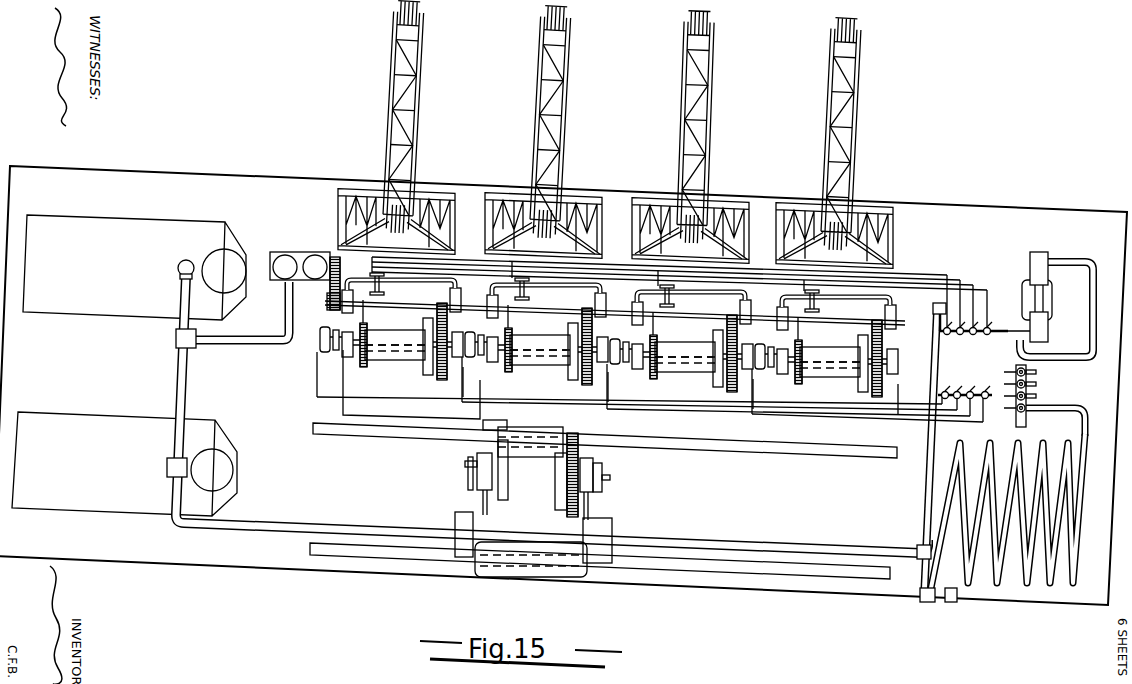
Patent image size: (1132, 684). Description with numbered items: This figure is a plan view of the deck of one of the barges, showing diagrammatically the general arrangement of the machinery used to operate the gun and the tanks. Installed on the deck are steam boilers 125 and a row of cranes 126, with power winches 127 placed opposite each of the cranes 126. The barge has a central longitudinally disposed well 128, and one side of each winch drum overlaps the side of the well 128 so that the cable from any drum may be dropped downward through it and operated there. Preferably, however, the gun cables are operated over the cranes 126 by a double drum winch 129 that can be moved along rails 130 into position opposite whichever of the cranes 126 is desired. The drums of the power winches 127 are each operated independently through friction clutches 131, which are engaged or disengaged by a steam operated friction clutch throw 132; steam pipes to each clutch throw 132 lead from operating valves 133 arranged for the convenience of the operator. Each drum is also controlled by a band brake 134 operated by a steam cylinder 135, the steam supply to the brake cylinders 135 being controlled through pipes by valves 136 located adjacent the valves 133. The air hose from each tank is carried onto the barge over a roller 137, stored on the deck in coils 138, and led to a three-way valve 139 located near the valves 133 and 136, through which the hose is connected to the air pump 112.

The air pump 112 is at (1027, 260).
The steam boilers 125 is at (33, 428).
The cranes 126 is at (537, 55).
The power winches 127 is at (547, 357).
The well 128 is at (368, 377).
The double drum winch 129 is at (538, 482).
The rails 130 is at (448, 433).
The friction clutches 131 is at (863, 345).
The friction clutch throw 132 is at (320, 340).
The operating valves 133 is at (945, 390).
The band brake 134 is at (362, 320).
The steam cylinder 135 is at (500, 283).
The valves 136 is at (945, 333).
The roller 137 is at (930, 600).
The coils 138 is at (1050, 577).
The three-way valve 139 is at (1030, 377).